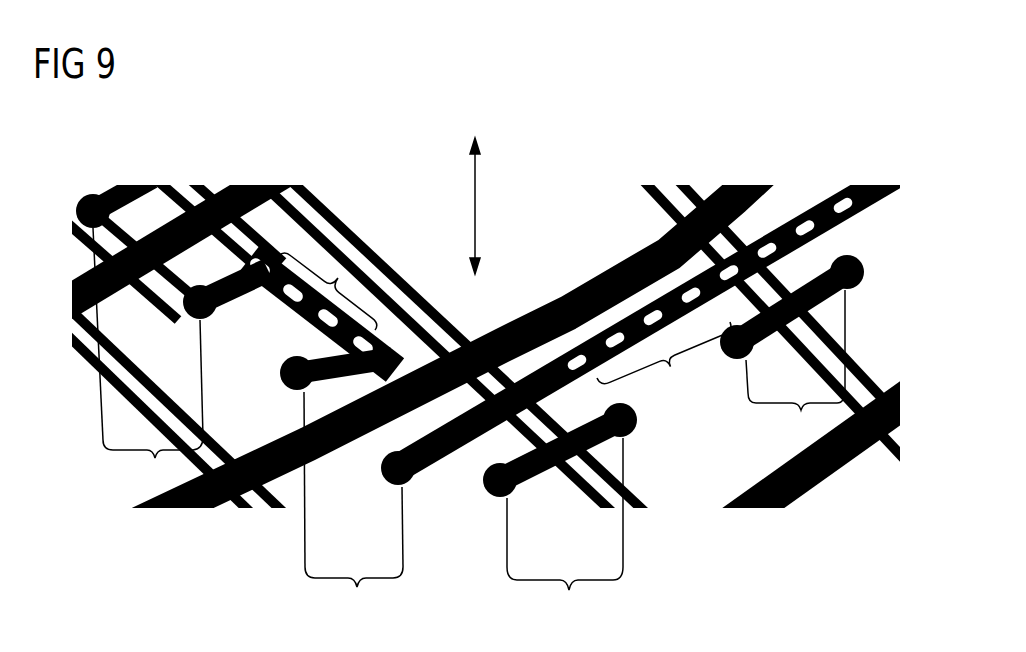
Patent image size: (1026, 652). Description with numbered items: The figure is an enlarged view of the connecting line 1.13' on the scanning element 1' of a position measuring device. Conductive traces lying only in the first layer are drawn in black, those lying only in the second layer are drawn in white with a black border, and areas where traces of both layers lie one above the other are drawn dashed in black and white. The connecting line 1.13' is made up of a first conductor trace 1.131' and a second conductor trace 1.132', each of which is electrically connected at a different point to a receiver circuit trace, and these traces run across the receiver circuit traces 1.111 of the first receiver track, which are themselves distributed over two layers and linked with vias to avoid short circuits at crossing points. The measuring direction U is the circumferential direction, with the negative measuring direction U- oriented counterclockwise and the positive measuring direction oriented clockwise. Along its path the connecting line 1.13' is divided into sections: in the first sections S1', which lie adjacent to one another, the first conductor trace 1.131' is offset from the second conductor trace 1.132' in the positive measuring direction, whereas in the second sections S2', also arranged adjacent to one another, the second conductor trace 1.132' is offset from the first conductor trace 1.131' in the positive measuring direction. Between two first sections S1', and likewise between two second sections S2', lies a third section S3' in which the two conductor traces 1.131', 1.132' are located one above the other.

The scanning element 1' is at (353, 194).
The receiver circuit trace 1.111 is at (580, 293).
The connecting line 1.13' is at (650, 320).
The first conductor trace 1.131' is at (461, 337).
The second conductor trace 1.132' is at (485, 337).
The first section S1' is at (248, 429).
The second section S2' is at (676, 465).
The third section S3' is at (505, 314).
The measuring direction U is at (486, 206).
The negative measuring direction U- is at (471, 123).